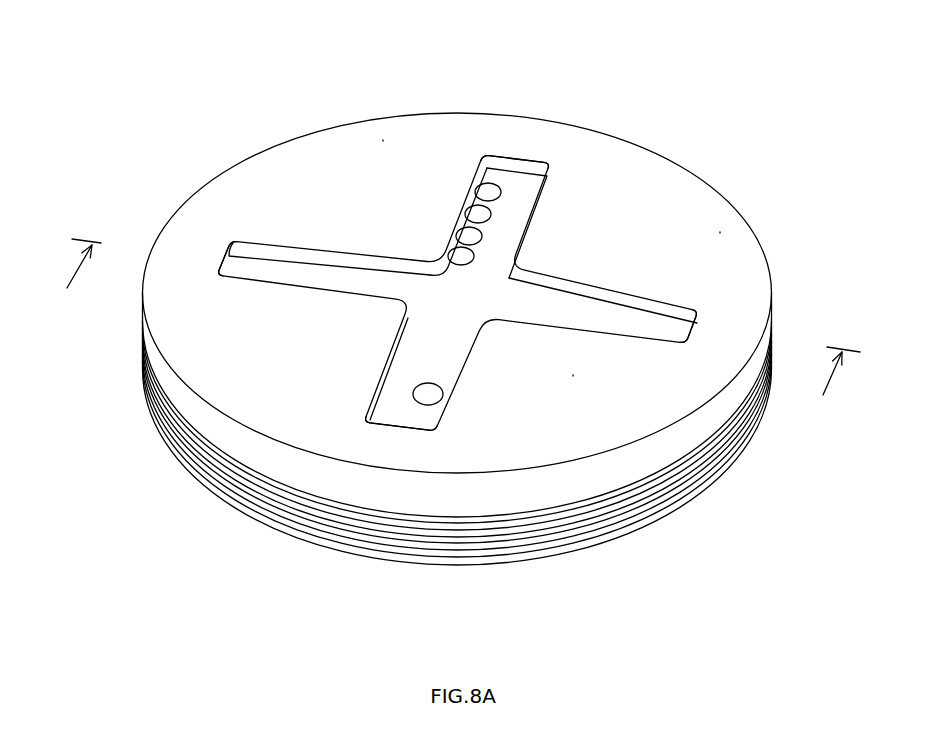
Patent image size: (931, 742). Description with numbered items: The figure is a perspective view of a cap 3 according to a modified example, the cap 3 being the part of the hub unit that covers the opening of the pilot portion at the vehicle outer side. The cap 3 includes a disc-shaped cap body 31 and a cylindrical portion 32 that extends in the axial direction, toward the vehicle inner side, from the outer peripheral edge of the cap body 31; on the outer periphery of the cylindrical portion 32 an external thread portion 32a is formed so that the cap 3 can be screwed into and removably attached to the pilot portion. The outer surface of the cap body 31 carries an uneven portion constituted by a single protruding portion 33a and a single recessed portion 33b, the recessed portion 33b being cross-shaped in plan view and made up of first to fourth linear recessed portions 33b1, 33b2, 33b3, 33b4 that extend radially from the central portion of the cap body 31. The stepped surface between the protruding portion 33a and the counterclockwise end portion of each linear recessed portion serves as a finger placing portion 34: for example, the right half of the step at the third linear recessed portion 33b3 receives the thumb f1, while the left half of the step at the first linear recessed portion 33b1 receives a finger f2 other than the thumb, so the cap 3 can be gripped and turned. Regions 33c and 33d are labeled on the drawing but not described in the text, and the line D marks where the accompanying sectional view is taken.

The cap 3 is at (268, 130).
The cap body 31 is at (328, 127).
The cylindrical portion 32 is at (743, 447).
The external thread portion 32a is at (553, 547).
The protruding portion 33a is at (383, 140).
The recessed portion 33b is at (474, 306).
The first linear recessed portion 33b1 is at (527, 165).
The second linear recessed portion 33b2 is at (324, 268).
The third linear recessed portion 33b3 is at (390, 406).
The fourth linear recessed portion 33b4 is at (650, 340).
The top surface region 33c is at (720, 232).
The surface region 33d is at (573, 375).
The finger placing portion 34 is at (478, 180).
The thumb f1 is at (414, 385).
The finger f2 is at (488, 227).
The line D- D is at (454, 329).